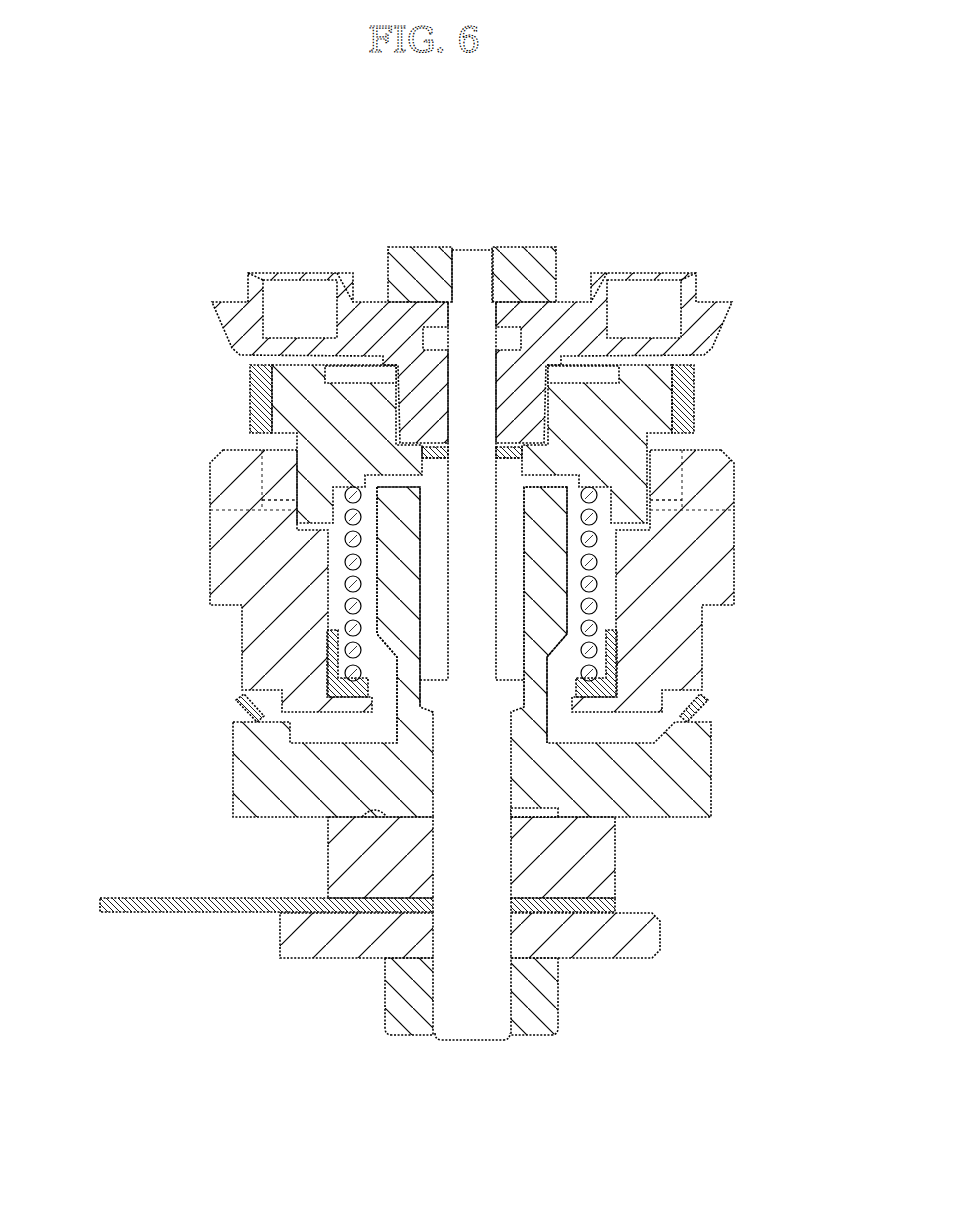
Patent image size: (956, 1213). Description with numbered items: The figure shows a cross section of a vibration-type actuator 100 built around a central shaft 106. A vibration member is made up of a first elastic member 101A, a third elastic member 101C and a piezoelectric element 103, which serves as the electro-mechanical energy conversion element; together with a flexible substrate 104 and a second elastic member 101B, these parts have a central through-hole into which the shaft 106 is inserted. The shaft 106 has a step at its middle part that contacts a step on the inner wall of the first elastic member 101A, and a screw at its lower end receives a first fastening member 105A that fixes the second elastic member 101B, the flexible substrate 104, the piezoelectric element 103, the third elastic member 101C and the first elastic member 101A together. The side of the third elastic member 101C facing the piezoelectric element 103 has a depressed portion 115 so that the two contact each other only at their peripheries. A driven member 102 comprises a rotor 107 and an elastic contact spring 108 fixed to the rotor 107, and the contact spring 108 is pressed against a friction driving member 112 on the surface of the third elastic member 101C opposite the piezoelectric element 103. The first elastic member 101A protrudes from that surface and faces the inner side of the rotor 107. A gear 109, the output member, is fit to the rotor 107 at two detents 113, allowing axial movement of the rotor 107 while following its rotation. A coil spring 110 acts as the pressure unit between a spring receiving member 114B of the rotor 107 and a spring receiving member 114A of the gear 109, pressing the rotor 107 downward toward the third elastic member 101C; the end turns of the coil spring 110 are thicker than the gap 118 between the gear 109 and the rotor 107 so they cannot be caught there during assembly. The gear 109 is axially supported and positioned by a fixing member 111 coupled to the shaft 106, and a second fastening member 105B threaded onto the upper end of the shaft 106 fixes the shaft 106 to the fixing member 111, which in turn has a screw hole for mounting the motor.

The valve device 100 is at (392, 212).
The first elastic member 101A is at (560, 548).
The second elastic member 101B is at (650, 935).
The third elastic member 101C is at (688, 770).
The driven member 102 is at (725, 486).
The piezoelectric element 103 is at (600, 862).
The flexible substrate 104 is at (175, 898).
The first fastening member 105A is at (548, 992).
The second fastening member 105B is at (553, 247).
The shaft 106 is at (472, 247).
The rotor 107 is at (222, 570).
The contact spring 108 is at (238, 705).
The gear 109 is at (250, 390).
The coil spring 110 is at (600, 590).
The fixing member 111 is at (230, 335).
The friction driving member 112 is at (700, 715).
The detents 113 is at (680, 468).
The spring receiving member 114A is at (262, 410).
The spring receiving member 114B is at (330, 670).
The depressed portion 115 is at (368, 810).
The gap 118 is at (300, 530).